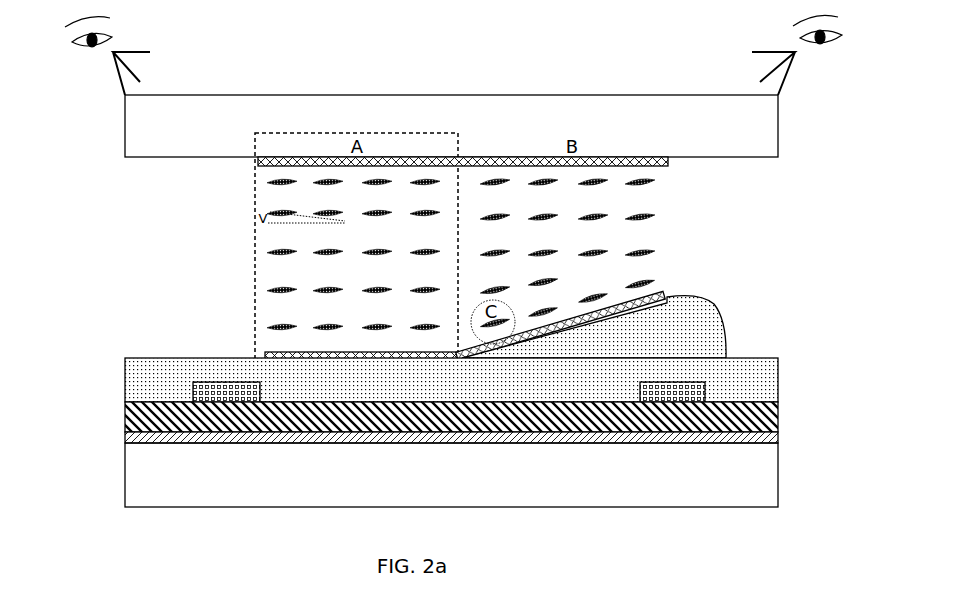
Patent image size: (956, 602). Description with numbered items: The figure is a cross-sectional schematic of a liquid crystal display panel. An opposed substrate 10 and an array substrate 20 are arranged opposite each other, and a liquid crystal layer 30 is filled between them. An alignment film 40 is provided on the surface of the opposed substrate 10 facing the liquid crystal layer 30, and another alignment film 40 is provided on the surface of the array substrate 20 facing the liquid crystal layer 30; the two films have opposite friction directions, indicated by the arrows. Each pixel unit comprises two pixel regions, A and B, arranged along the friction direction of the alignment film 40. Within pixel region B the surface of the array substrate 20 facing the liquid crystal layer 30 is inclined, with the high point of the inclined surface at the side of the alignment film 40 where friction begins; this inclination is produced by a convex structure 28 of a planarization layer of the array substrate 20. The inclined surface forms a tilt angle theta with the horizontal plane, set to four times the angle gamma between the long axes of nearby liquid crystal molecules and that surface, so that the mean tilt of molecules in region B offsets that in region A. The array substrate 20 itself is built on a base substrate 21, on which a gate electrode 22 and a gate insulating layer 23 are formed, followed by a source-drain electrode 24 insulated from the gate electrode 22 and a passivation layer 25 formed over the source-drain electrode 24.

The opposed substrate 10 is at (752, 128).
The alignment film 40 is at (267, 167).
The liquid crystal layer 30 is at (700, 170).
The convex structure 28 is at (695, 338).
The array substrate 20 is at (493, 427).
The passivation layer 25 is at (778, 380).
The source-drain electrode 24 is at (213, 385).
The gate insulating layer 23 is at (730, 418).
The gate electrode 22 is at (730, 438).
The base substrate 21 is at (470, 475).